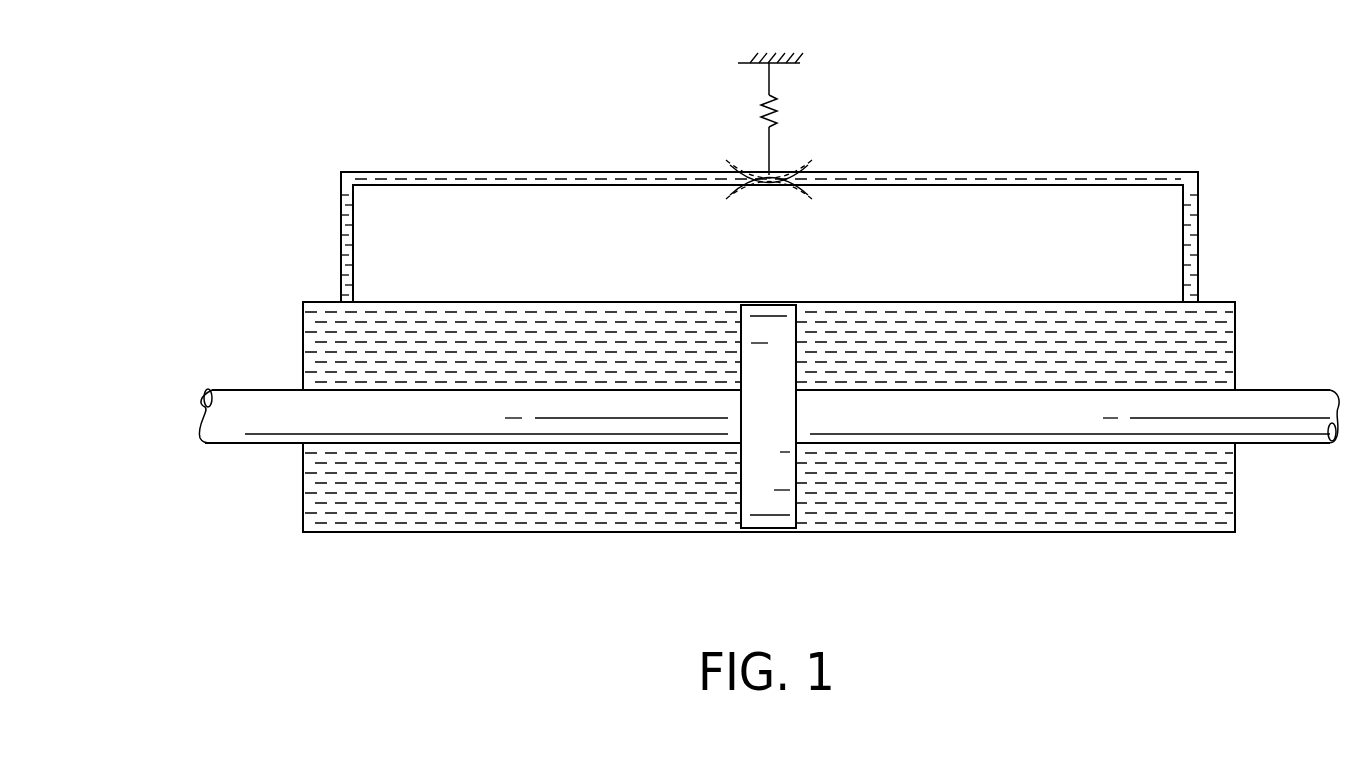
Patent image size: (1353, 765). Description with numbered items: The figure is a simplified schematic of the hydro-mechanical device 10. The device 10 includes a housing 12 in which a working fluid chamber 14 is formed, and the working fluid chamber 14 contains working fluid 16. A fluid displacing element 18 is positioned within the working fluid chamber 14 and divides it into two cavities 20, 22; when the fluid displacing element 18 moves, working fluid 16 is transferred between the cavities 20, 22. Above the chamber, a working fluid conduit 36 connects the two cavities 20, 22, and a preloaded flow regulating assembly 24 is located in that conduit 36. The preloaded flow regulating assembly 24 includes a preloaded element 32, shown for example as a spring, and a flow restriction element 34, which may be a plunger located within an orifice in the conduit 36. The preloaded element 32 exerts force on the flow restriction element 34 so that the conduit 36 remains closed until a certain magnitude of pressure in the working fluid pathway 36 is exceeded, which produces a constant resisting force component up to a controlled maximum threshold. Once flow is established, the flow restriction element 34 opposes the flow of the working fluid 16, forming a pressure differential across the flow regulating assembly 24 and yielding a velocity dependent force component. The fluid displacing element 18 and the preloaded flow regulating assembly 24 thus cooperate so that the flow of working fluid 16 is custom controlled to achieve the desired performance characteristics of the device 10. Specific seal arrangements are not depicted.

The hydro-mechanical device 10 is at (266, 149).
The housing 12 is at (769, 480).
The working fluid chamber 14 is at (769, 210).
The working fluid 16 is at (903, 330).
The fluid displacing element 18 is at (765, 323).
The cavity 20 is at (530, 487).
The cavity 22 is at (1050, 503).
The preloaded flow regulating assembly 24 is at (756, 117).
The preloaded element 32 is at (778, 100).
The flow restriction element 34 is at (789, 173).
The working fluid conduit 36 is at (962, 172).